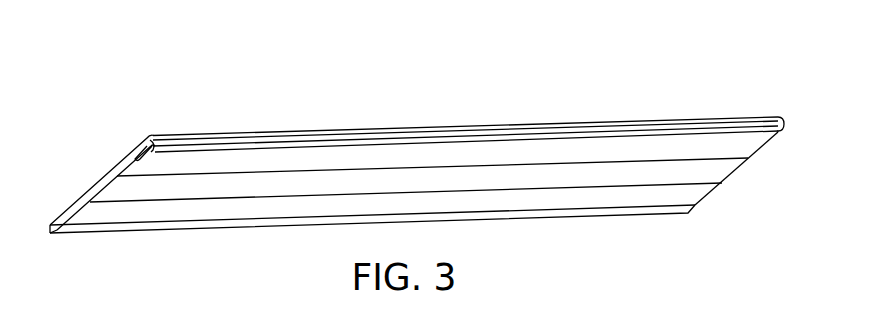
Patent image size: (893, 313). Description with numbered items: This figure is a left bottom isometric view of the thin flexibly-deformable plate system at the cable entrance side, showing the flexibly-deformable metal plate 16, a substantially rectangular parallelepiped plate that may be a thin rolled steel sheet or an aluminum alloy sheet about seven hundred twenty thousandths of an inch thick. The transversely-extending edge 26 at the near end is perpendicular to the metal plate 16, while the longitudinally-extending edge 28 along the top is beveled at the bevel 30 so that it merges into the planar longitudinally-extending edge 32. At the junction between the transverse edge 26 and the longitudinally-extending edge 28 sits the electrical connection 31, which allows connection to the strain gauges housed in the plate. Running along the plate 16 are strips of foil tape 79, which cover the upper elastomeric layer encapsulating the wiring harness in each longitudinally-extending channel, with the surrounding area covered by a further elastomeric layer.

The flexibly-deformable metal plate 16 is at (453, 110).
The transversely-extending edge 26 is at (96, 188).
The longitudinally-extending edge 28 is at (218, 134).
The bevel 30 is at (252, 140).
The electrical connection 31 is at (141, 155).
The planar longitudinally-extending edge 32 is at (306, 140).
The foil tape 79 is at (606, 150).